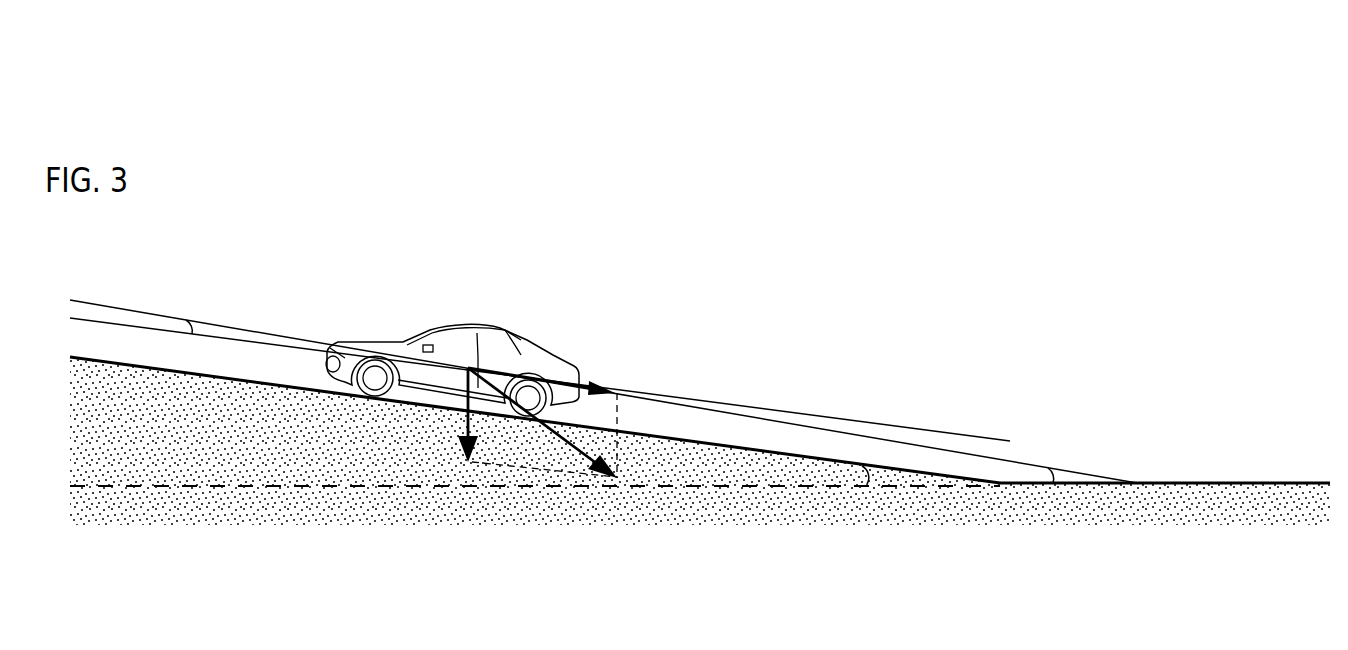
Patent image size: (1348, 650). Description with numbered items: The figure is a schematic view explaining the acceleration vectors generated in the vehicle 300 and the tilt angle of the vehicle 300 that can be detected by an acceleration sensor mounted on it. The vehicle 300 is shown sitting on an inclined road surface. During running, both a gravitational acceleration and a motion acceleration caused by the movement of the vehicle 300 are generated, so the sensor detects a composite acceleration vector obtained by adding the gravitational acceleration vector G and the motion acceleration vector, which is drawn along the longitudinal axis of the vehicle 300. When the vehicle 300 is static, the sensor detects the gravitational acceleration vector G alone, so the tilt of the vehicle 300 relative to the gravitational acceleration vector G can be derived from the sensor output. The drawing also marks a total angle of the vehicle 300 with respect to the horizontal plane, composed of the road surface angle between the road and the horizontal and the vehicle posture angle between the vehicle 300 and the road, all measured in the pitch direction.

The vehicle 300 is at (540, 339).
The gravitational acceleration vector G is at (462, 420).